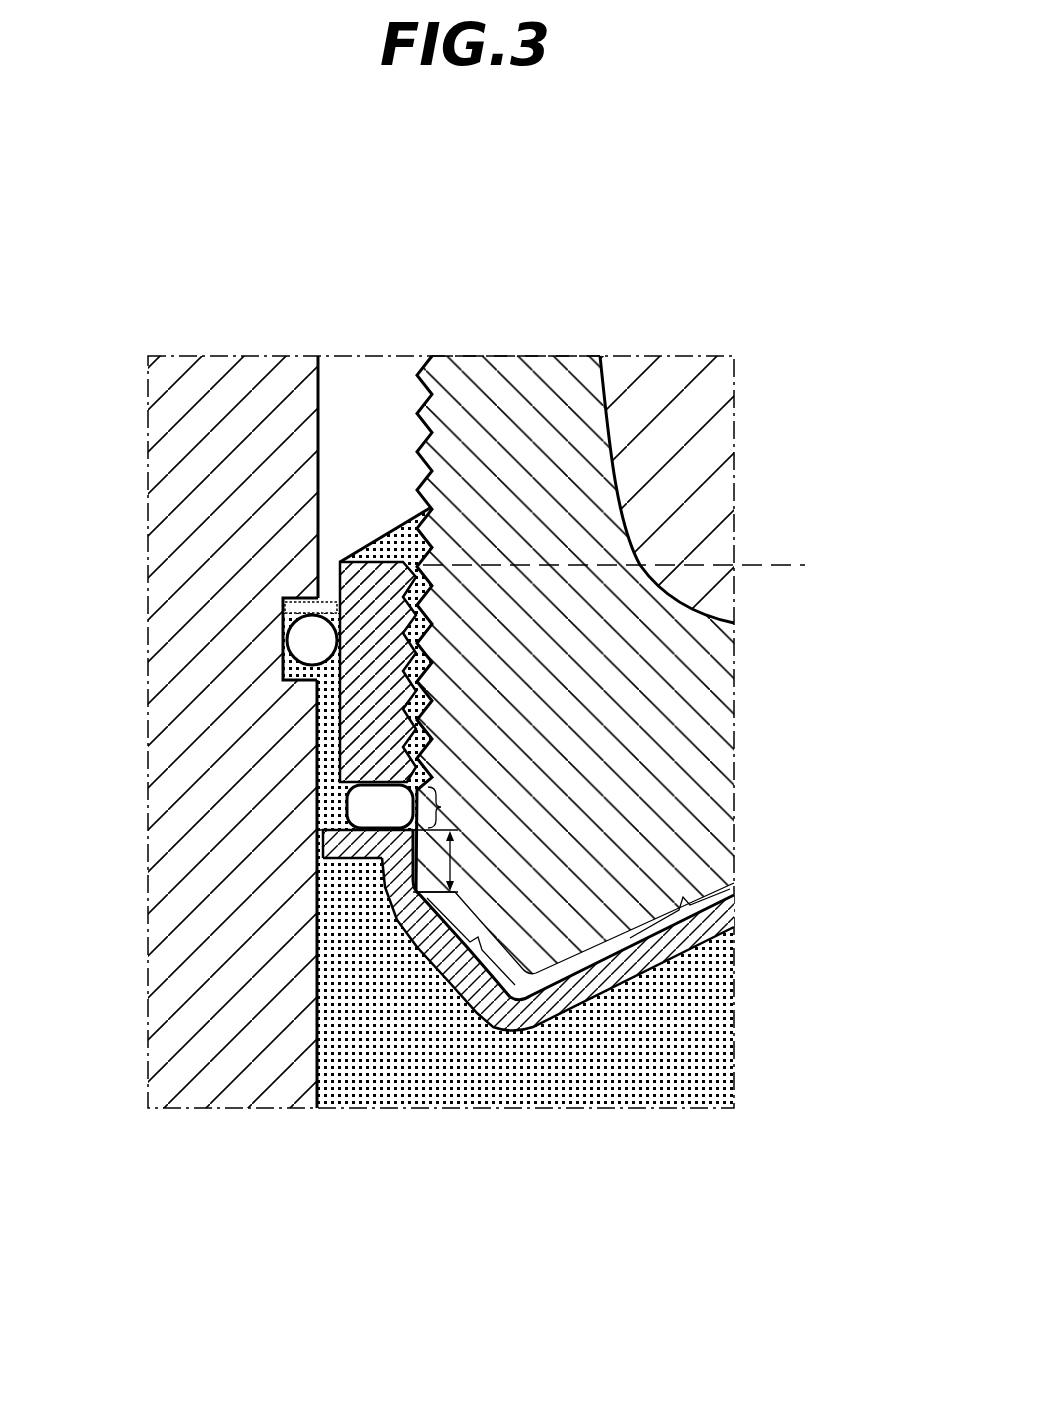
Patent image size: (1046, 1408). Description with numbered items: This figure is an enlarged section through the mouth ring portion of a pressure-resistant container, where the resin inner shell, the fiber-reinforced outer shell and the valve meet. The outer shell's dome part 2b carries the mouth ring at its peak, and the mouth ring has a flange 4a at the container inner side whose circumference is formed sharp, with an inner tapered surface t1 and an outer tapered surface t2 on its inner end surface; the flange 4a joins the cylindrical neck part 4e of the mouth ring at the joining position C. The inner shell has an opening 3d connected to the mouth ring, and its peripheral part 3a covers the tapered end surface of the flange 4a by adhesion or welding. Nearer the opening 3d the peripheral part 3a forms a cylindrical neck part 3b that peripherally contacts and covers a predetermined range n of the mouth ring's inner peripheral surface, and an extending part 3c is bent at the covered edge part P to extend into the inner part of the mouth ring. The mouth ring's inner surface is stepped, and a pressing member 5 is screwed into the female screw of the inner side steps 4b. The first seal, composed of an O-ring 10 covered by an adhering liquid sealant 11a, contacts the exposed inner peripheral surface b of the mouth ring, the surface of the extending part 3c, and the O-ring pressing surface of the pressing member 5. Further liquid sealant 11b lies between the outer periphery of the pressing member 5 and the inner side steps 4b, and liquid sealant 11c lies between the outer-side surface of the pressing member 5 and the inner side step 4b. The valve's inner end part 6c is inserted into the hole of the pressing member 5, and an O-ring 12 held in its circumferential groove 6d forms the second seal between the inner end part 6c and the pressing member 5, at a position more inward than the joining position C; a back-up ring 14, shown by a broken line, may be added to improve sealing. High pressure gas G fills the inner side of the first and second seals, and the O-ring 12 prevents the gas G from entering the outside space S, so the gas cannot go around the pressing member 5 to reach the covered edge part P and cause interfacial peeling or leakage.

The inner end part 6c is at (180, 421).
The circumferential groove 6d is at (282, 625).
The back-up ring 14 is at (307, 607).
The O-ring 12 is at (305, 643).
The pressing member 5 is at (340, 712).
The liquid sealant 11a is at (327, 833).
The liquid sealant 11b is at (425, 685).
The liquid sealant 11c is at (377, 540).
The O-ring 10 is at (372, 810).
The flange 4a is at (675, 728).
The inner side steps 4b is at (415, 393).
The cylindrical neck part 4e is at (522, 370).
The dome part 2b is at (693, 370).
The peripheral part 3a is at (548, 1020).
The cylindrical neck part 3b is at (397, 872).
The extending part 3c is at (362, 863).
The opening 3d is at (323, 855).
The high pressure gas G is at (690, 1040).
The covered edge part P is at (417, 940).
The outside space S is at (348, 387).
The joining position C is at (778, 562).
The inner peripheral surface b is at (441, 808).
The predetermined range n is at (444, 861).
The inner tapered surface t1 is at (472, 941).
The outer tapered surface t2 is at (680, 900).